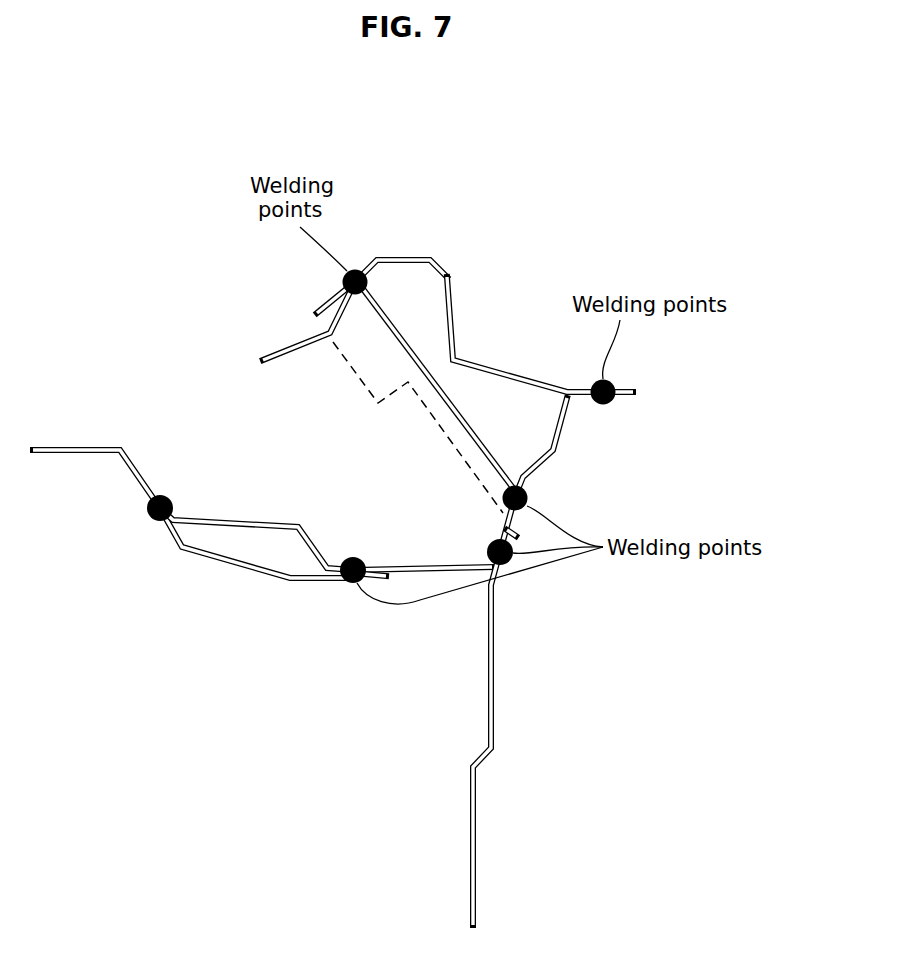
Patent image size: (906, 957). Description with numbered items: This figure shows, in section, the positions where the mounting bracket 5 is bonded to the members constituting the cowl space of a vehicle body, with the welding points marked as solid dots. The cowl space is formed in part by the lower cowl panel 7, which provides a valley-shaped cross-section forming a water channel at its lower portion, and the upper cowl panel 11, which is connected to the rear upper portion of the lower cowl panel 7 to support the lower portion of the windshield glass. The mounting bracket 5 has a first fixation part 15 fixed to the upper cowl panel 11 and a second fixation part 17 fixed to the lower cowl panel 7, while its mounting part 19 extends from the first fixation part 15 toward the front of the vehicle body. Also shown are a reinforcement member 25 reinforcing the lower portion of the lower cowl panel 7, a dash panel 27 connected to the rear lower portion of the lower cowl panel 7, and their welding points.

The mounting bracket 5 is at (412, 306).
The lower cowl panel 7 is at (563, 431).
The upper cowl panel 11 is at (453, 325).
The first fixation part 15 is at (358, 268).
The second fixation part 17 is at (523, 481).
The mounting part 19 is at (293, 345).
The reinforcement member 25 is at (263, 577).
The dash panel 27 is at (493, 692).